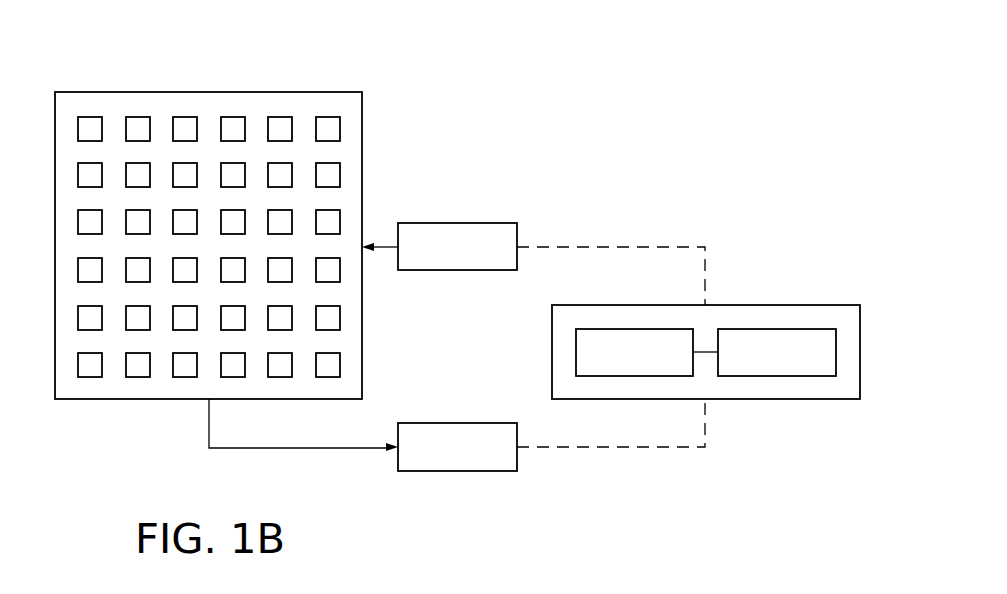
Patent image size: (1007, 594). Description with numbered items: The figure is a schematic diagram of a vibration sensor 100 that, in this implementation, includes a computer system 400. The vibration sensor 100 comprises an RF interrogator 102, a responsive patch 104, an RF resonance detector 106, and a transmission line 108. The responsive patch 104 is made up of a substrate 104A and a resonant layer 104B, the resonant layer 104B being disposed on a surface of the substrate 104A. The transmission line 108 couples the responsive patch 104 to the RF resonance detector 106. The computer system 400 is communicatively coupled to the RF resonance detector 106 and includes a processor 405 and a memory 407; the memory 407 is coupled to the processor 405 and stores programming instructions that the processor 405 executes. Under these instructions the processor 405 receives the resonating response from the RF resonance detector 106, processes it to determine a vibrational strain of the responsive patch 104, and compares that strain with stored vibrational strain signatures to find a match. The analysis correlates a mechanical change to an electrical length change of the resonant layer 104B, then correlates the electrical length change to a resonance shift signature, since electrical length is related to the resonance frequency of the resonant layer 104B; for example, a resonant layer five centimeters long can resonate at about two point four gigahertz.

The vibration sensor 100 is at (680, 85).
The RF interrogator 102 is at (457, 271).
The responsive patch 104 is at (95, 59).
The substrate 104A is at (191, 81).
The resonant layer 104B is at (90, 377).
The RF resonance detector 106 is at (457, 472).
The transmission line 108 is at (303, 449).
The computer system 400 is at (750, 294).
The processor 405 is at (657, 366).
The memory 407 is at (798, 366).